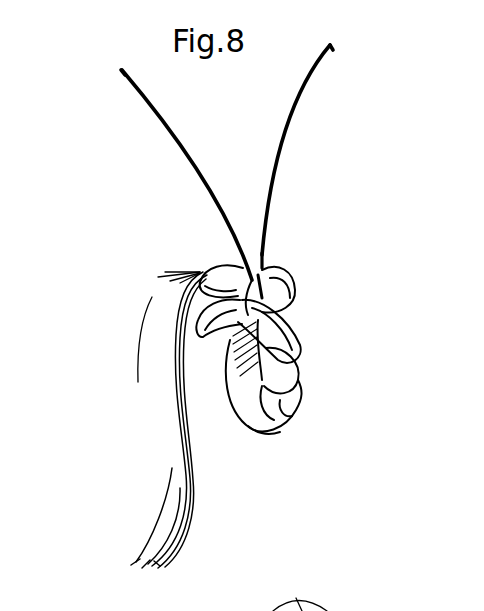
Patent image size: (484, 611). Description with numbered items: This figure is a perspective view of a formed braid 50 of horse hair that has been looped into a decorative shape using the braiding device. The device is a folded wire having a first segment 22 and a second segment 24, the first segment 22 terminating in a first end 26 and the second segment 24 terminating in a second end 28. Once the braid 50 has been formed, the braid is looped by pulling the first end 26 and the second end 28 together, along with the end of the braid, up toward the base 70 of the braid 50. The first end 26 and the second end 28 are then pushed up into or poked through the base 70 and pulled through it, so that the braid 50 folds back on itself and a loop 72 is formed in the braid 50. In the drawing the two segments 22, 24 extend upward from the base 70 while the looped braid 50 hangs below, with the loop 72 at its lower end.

The first segment 22 is at (288, 128).
The second segment 24 is at (160, 122).
The first end 26 is at (333, 45).
The second end 28 is at (120, 70).
The braid 50 is at (305, 352).
The base 70 is at (234, 266).
The loop 72 is at (273, 437).